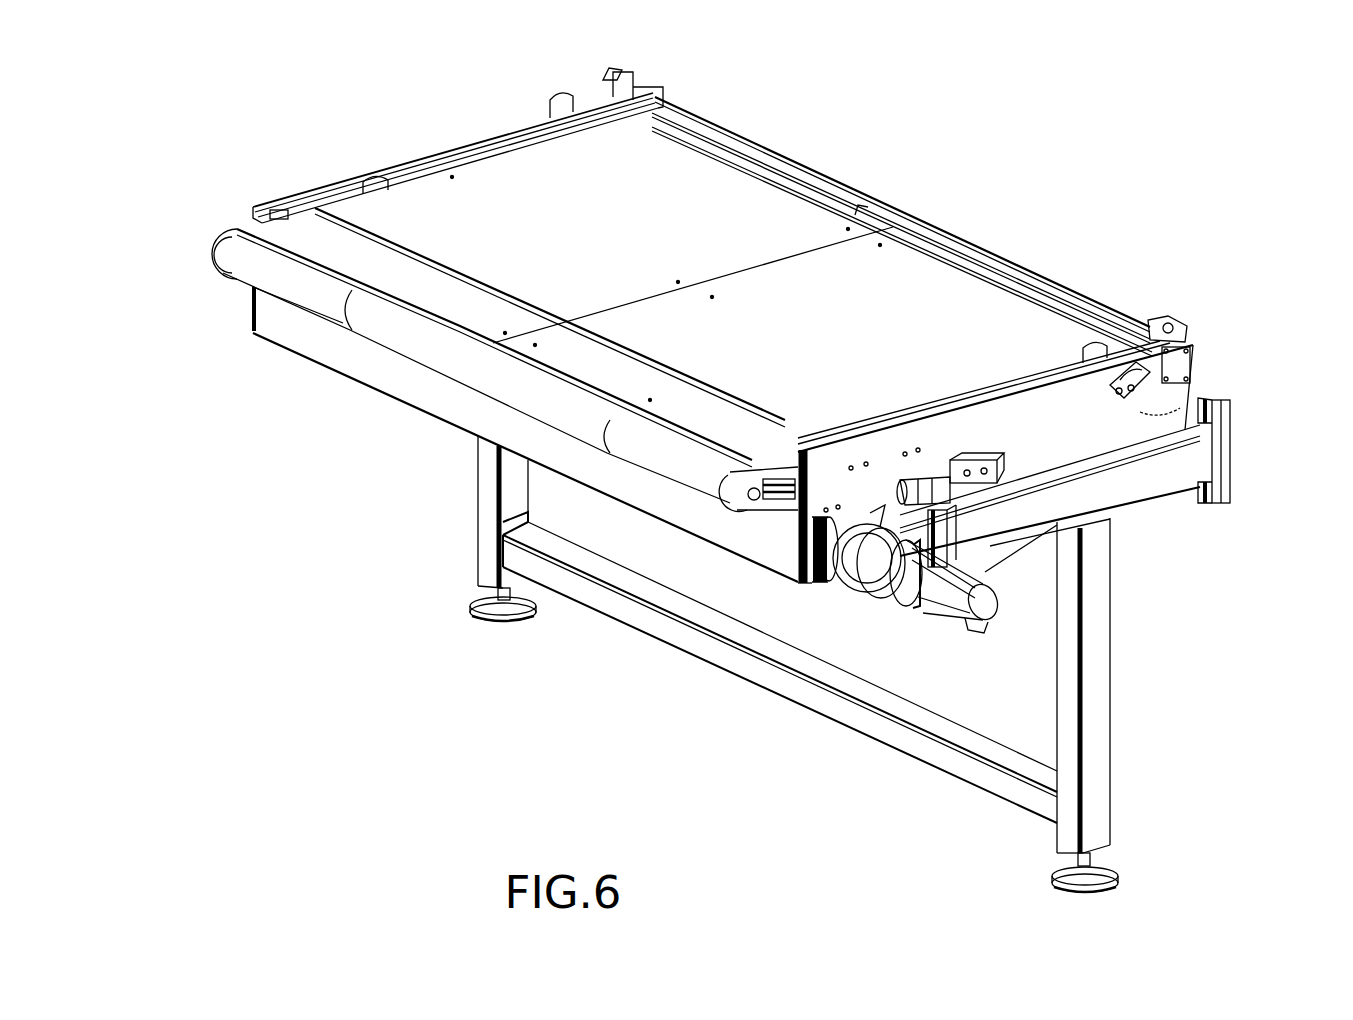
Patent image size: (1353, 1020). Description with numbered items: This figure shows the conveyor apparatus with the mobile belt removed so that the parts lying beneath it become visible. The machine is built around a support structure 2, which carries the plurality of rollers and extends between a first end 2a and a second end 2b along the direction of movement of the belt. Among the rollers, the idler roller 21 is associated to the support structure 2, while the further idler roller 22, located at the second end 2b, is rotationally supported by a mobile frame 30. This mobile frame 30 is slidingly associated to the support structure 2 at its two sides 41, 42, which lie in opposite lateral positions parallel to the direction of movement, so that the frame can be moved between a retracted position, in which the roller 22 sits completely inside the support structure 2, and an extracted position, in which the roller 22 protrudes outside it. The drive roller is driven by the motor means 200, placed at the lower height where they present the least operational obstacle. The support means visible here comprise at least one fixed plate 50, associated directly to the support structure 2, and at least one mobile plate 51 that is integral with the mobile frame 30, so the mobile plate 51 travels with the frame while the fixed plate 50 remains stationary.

The support structure 2 is at (1122, 633).
The first end 2a is at (778, 147).
The second end 2b is at (298, 321).
The idler roller 21 is at (860, 207).
The idler roller 22 is at (432, 348).
The mobile frame 30 is at (217, 247).
The side 41 is at (250, 222).
The side 42 is at (1181, 430).
The fixed plate 50 is at (523, 217).
The mobile plate 51 is at (323, 233).
The motor means 200 is at (866, 610).